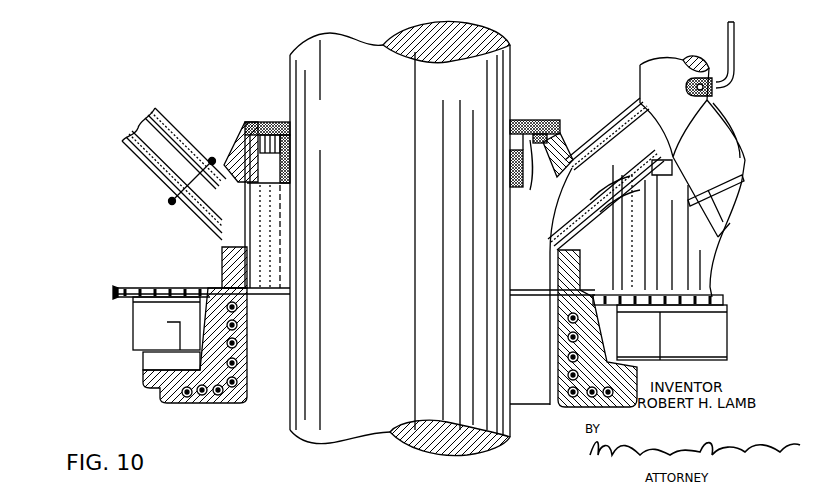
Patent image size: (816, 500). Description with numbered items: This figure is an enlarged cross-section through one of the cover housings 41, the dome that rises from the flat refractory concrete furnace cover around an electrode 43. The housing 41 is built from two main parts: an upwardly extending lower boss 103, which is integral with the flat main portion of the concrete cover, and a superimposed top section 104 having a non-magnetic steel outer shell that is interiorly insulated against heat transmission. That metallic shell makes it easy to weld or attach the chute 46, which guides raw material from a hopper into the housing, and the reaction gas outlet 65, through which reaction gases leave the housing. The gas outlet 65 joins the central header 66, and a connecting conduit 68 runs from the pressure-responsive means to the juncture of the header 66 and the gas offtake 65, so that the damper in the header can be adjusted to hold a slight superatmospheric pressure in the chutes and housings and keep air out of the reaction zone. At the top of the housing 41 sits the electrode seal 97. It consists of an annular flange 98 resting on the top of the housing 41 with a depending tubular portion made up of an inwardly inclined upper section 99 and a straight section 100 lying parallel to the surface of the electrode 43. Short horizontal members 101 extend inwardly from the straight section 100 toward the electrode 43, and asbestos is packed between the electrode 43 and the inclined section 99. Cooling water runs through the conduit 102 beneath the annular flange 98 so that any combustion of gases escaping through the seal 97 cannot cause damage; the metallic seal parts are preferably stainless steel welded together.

The cover housing 41 is at (216, 258).
The electrode 43 is at (400, 238).
The chute 46 is at (131, 153).
The reaction gas outlet 65 is at (611, 113).
The central header 66 is at (689, 61).
The connecting conduit 68 is at (735, 52).
The electrode seal 97 is at (542, 120).
The annular flange 98 is at (252, 120).
The inclined upper section 99 is at (528, 170).
The straight section 100 is at (284, 170).
The horizontal member 101 is at (510, 168).
The conduit 102 is at (566, 138).
The lower boss 103 is at (205, 309).
The top section 104 is at (238, 140).